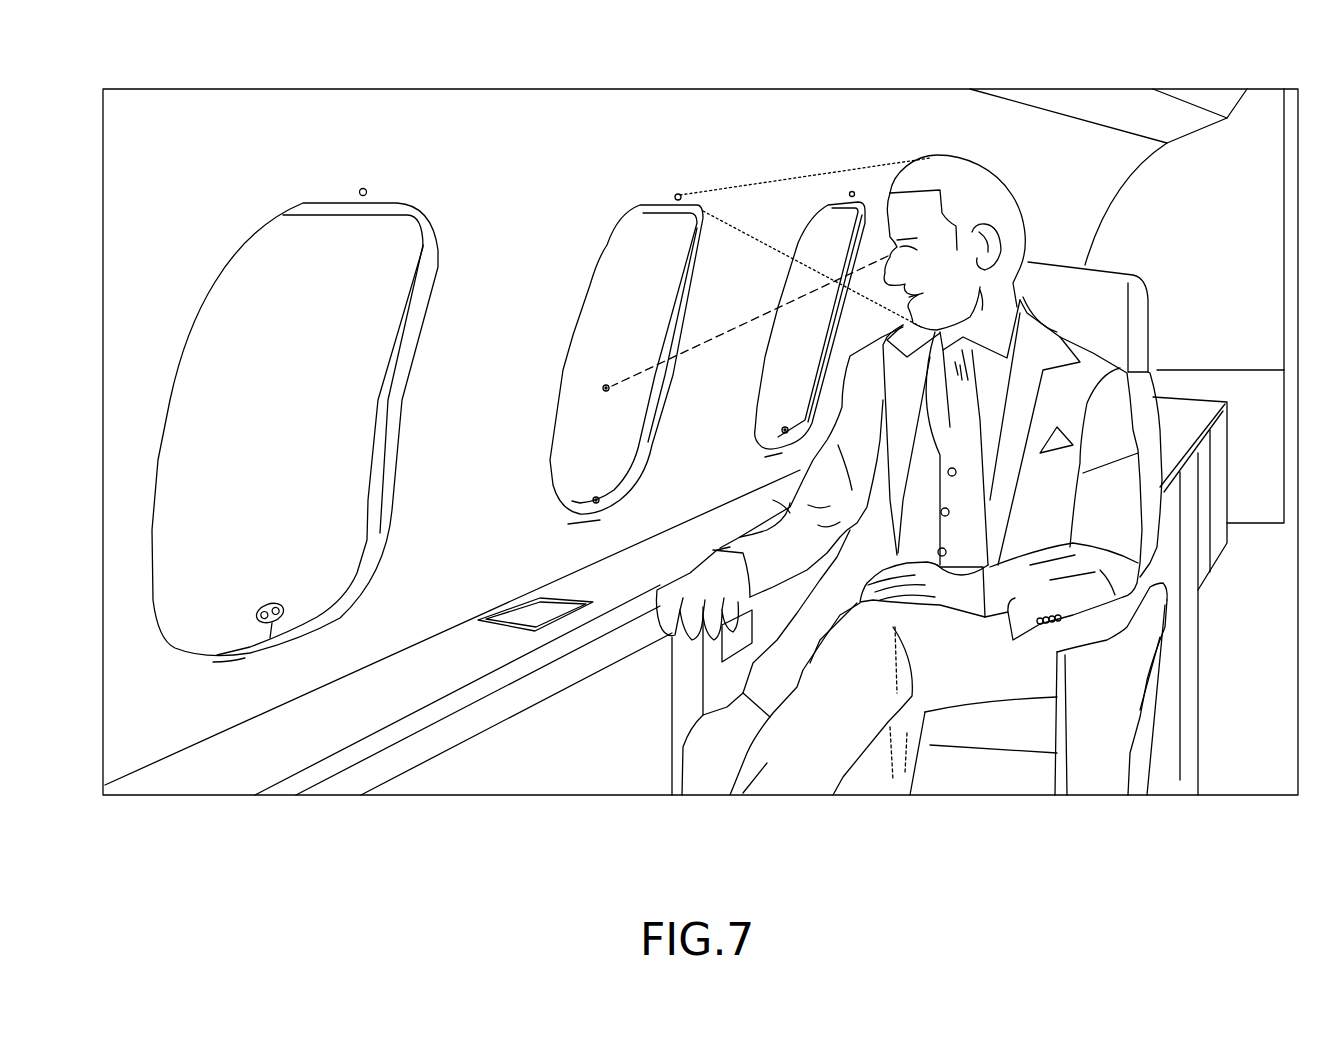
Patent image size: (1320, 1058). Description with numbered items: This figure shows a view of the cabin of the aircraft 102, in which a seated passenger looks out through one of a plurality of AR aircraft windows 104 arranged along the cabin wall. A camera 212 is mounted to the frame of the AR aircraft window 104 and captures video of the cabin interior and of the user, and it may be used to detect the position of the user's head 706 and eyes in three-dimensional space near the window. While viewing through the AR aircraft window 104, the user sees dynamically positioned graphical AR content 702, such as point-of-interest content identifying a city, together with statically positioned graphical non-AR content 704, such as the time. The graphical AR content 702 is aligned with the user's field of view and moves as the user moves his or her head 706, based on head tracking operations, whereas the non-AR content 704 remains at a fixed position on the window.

The aircraft 102 is at (195, 107).
The AR aircraft window 104 is at (343, 227).
The camera 212 is at (678, 193).
The dynamically positioned graphical AR content 702 is at (575, 418).
The statically positioned graphical non-AR content 704 is at (569, 498).
The head 706 is at (958, 167).